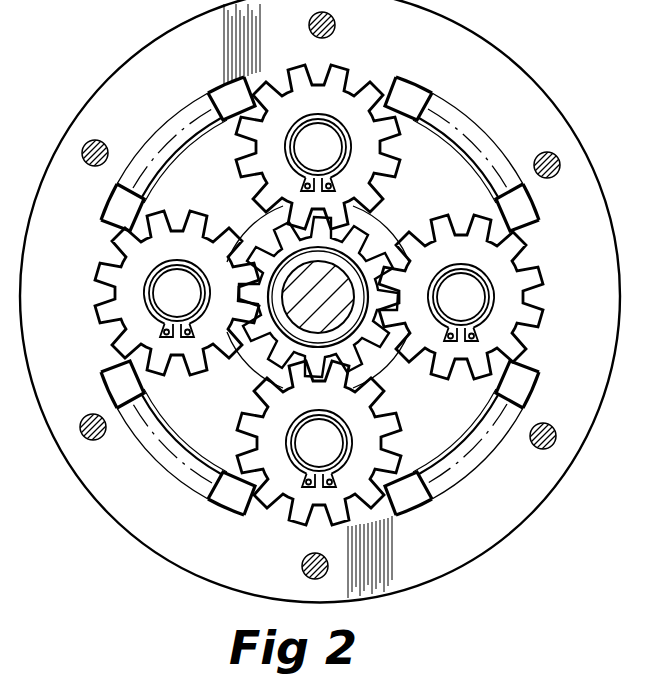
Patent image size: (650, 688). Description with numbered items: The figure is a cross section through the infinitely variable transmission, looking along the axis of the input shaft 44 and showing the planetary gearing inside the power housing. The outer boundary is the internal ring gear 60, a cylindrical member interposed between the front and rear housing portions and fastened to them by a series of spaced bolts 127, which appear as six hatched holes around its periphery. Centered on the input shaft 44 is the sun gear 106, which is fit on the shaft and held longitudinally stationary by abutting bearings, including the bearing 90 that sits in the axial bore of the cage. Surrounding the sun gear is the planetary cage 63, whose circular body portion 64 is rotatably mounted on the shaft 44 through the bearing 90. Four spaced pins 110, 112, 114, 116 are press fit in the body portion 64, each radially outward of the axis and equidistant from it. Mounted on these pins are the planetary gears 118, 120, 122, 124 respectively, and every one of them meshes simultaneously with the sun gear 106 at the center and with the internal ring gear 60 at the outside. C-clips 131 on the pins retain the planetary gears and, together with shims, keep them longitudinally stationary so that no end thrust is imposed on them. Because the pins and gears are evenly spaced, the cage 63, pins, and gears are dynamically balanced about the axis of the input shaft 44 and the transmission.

The input shaft 44 is at (272, 348).
The internal ring gear 60 is at (495, 52).
The planetary cage 63 is at (320, 276).
The circular body portion 64 is at (219, 478).
The bearing 90 is at (250, 224).
The sun gear 106 is at (362, 238).
The pin 110 is at (177, 295).
The pin 112 is at (321, 147).
The pin 114 is at (461, 301).
The pin 116 is at (312, 443).
The planetary gear 118 is at (166, 376).
The planetary gear 120 is at (238, 429).
The planetary gear 122 is at (480, 388).
The planetary gear 124 is at (385, 150).
The bolts 127 is at (336, 22).
The C-clips 131 is at (352, 88).